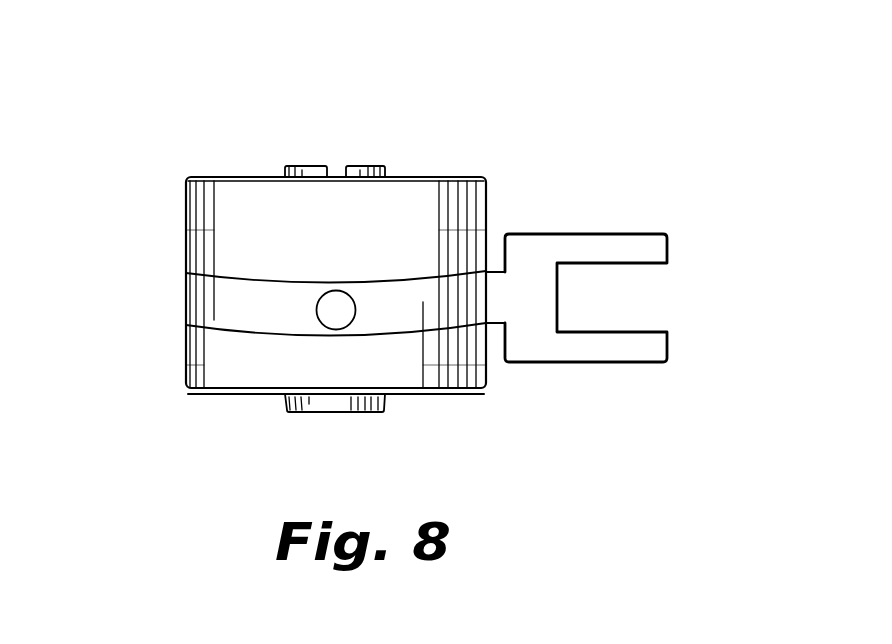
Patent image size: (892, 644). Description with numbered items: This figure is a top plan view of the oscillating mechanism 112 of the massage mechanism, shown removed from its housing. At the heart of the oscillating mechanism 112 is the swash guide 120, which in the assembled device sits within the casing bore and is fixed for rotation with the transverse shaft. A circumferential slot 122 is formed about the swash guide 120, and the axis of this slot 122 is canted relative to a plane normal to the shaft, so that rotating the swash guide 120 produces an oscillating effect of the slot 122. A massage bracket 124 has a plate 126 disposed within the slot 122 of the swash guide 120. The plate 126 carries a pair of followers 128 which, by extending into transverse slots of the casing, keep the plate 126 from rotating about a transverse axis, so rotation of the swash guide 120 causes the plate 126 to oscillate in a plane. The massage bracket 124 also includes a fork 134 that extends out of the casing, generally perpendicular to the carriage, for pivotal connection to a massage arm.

The oscillating mechanism 112 is at (429, 277).
The swash guide 120 is at (473, 396).
The circumferential slot 122 is at (190, 318).
The massage bracket 124 is at (629, 331).
The plate 126 is at (246, 318).
The followers 128 is at (338, 330).
The fork 134 is at (667, 347).